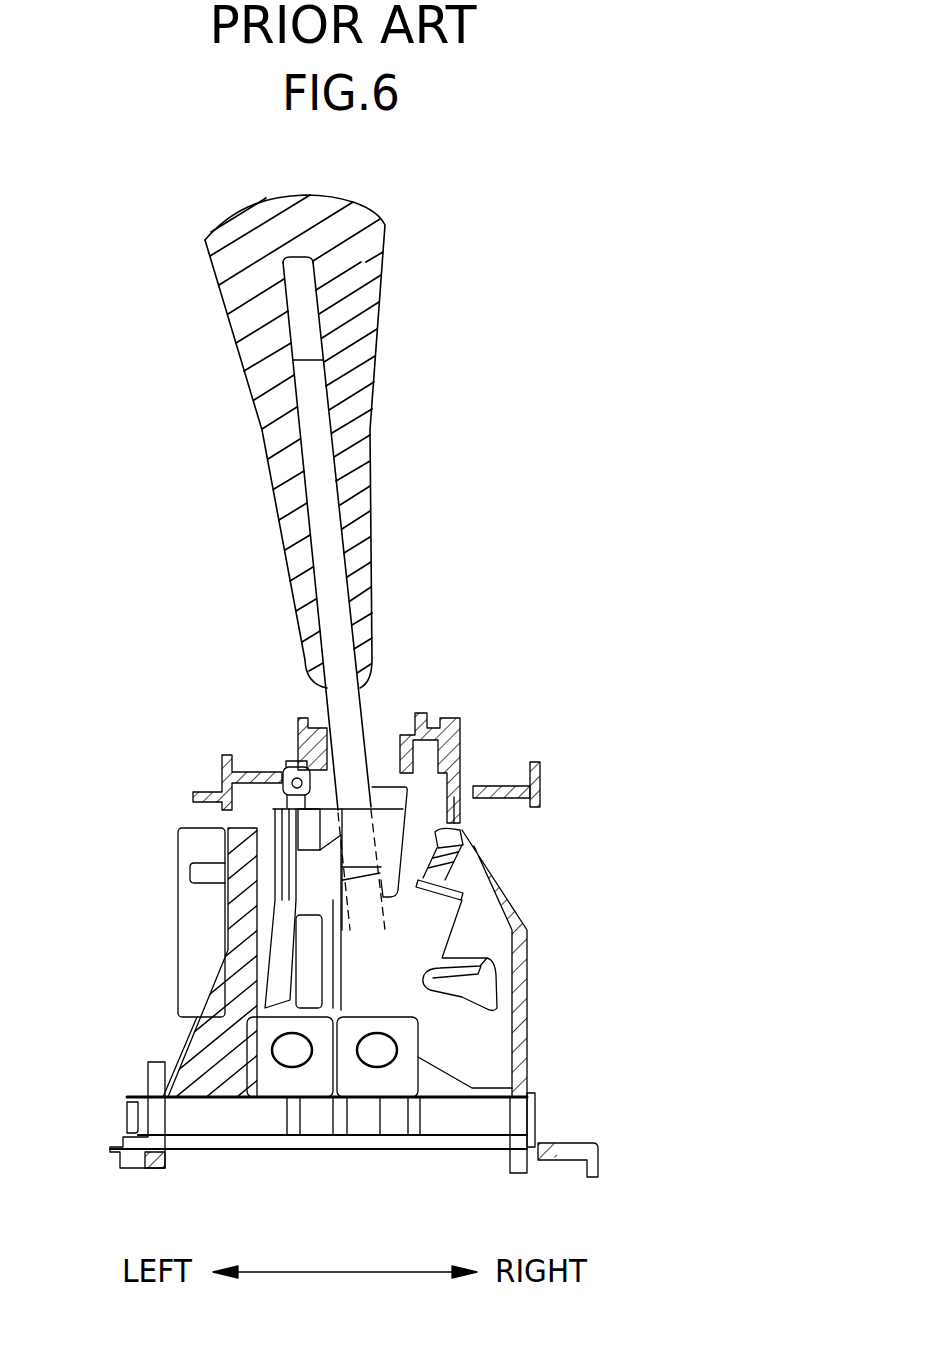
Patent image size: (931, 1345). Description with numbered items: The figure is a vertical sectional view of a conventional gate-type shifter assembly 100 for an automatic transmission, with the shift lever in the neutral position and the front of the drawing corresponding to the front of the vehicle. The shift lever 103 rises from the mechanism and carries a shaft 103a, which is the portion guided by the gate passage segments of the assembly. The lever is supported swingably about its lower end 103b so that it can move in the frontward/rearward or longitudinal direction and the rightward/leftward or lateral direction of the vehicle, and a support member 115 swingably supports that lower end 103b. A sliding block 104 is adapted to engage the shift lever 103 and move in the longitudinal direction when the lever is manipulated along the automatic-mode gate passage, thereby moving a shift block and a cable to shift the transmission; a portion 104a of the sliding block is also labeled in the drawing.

The gate-type shifter assembly 100 is at (487, 533).
The shift lever 103 is at (375, 413).
The shaft 103a is at (367, 745).
The lower end 103b is at (390, 967).
The sliding block 104 is at (392, 830).
The guide portion 104a is at (400, 790).
The support member 115 is at (452, 1054).